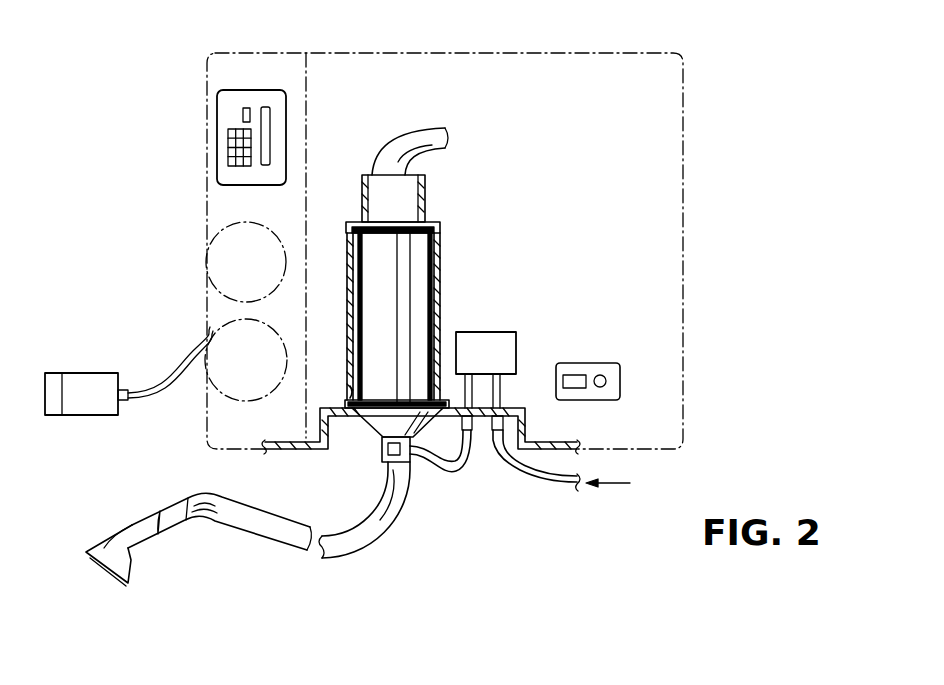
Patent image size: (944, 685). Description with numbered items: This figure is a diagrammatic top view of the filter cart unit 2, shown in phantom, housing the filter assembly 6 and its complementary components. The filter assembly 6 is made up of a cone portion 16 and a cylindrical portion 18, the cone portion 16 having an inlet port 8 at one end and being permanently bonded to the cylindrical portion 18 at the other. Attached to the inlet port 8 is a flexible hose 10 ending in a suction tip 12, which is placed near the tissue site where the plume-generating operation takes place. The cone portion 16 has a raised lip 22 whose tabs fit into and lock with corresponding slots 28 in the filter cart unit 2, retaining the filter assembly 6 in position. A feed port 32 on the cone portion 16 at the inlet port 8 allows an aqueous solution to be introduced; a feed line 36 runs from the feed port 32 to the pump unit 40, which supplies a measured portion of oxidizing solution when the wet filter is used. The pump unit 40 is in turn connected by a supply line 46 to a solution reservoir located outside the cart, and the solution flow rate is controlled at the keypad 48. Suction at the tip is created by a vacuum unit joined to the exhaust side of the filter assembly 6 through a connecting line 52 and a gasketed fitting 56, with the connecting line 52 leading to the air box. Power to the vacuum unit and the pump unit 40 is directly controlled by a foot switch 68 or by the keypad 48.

The filter cart unit 2 is at (772, 152).
The filter assembly 6 is at (368, 440).
The inlet port 8 is at (412, 465).
The flexible hose 10 is at (262, 483).
The suction tip 12 is at (86, 555).
The cone portion 16 is at (382, 413).
The cylindrical portion 18 is at (413, 262).
The raised lip 22 is at (350, 392).
The slots 28 is at (340, 428).
The feed port 32 is at (400, 503).
The feed line 36 is at (452, 467).
The pump unit 40 is at (493, 366).
The supply line 46 is at (577, 487).
The keypad 48 is at (228, 150).
The connecting line 52 is at (411, 128).
The gasketed fitting 56 is at (438, 226).
The foot switch 68 is at (100, 372).